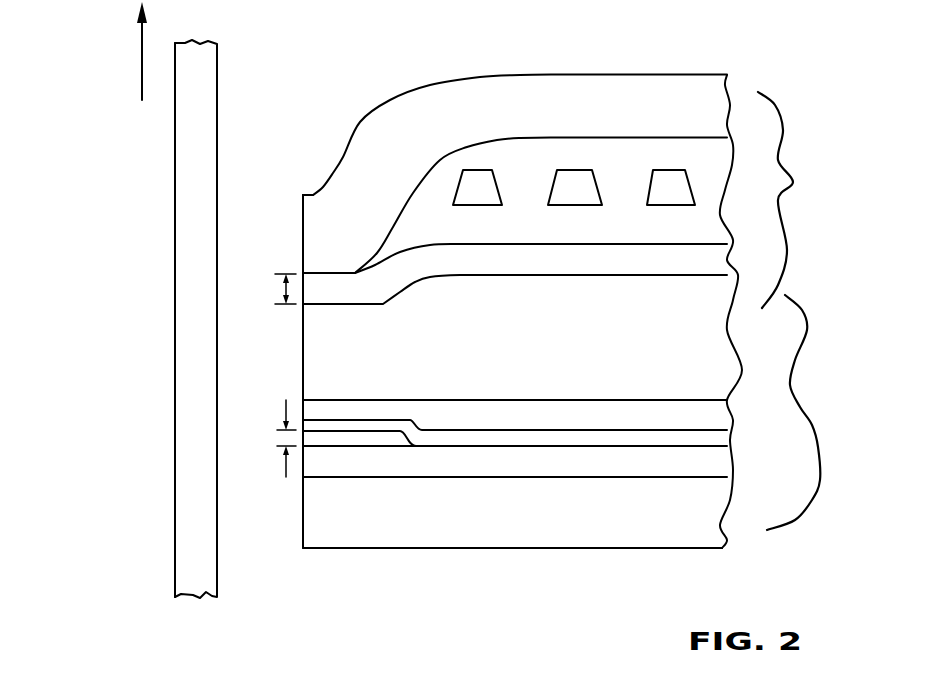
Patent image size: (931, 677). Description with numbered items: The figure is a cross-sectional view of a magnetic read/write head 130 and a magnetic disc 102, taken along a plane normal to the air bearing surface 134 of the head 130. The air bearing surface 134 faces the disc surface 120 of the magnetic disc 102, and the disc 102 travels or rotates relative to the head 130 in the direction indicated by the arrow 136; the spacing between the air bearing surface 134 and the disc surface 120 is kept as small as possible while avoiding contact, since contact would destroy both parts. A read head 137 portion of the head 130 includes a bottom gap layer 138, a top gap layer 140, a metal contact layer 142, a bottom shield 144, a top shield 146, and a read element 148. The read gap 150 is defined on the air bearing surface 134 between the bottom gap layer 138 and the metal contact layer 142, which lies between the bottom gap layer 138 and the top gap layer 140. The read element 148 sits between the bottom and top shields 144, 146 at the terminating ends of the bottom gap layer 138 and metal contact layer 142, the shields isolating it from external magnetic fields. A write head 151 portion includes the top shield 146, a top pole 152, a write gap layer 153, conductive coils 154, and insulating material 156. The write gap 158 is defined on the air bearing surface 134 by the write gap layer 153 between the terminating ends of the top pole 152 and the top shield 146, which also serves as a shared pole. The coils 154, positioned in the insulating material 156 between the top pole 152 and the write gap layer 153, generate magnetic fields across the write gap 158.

The magnetic disc 102 is at (185, 137).
The disc surface 120 is at (217, 68).
The head 130 is at (738, 64).
The air bearing surface 134 is at (302, 211).
The arrow 136 is at (122, 51).
The read head 137 is at (808, 412).
The bottom gap layer 138 is at (651, 471).
The top gap layer 140 is at (653, 427).
The metal contact layer 142 is at (717, 437).
The bottom shield 144 is at (654, 524).
The top shield 146 is at (641, 356).
The read element 148 is at (352, 438).
The read gap 150 is at (272, 445).
The write head 151 is at (798, 200).
The top pole 152 is at (568, 124).
The write gap layer 153 is at (631, 274).
The conductive coil 154 is at (657, 197).
The insulating material 156 is at (686, 237).
The write gap 158 is at (266, 290).